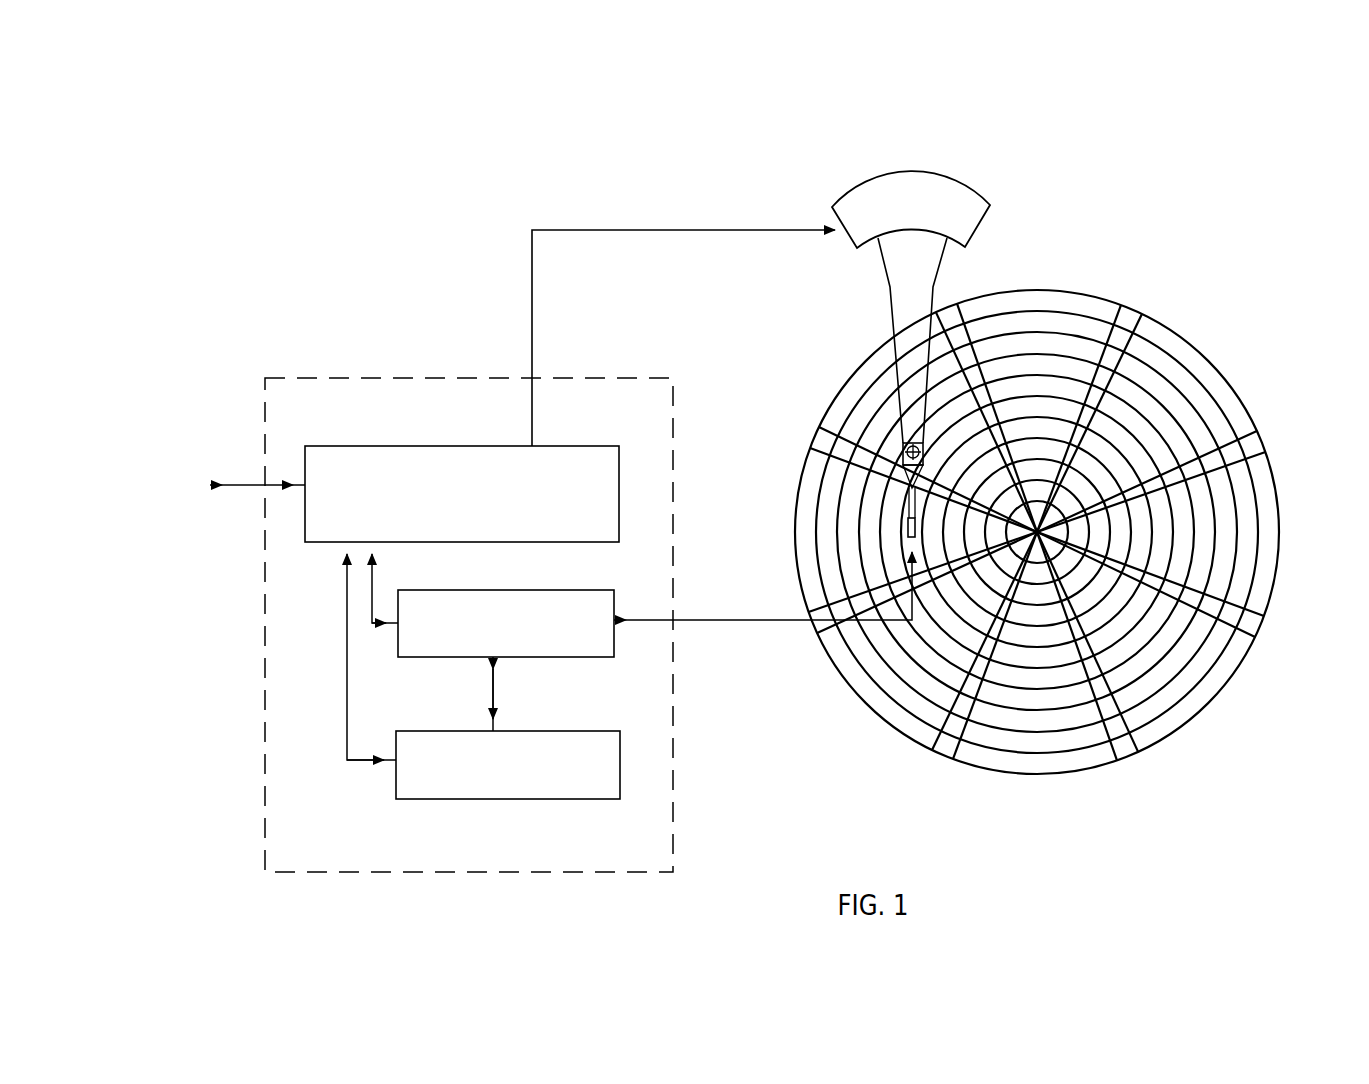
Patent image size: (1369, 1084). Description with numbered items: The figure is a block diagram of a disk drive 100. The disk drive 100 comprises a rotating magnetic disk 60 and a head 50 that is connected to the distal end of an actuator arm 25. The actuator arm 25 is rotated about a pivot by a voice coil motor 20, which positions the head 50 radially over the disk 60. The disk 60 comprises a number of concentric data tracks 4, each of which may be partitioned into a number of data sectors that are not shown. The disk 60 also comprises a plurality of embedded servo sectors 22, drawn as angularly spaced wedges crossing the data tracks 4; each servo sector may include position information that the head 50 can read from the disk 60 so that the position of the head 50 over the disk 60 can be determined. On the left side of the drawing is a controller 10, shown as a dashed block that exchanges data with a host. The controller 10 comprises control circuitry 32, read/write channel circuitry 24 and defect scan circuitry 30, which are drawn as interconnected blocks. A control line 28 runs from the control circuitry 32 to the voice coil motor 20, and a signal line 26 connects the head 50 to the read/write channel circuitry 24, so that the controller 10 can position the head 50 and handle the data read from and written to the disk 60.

The disk drive 100 is at (1283, 108).
The concentric data tracks 4 is at (1037, 330).
The controller 10 is at (643, 377).
The voice coil motor 20 is at (856, 245).
The embedded servo sectors 22 is at (954, 311).
The read/write channel circuitry 24 is at (607, 660).
The actuator arm 25 is at (891, 323).
The read signal 26 is at (714, 624).
The control signal 28 is at (531, 311).
The defect scan circuitry 30 is at (608, 802).
The control circuitry 32 is at (598, 446).
The head 50 is at (898, 546).
The rotating magnetic disk 60 is at (1212, 340).